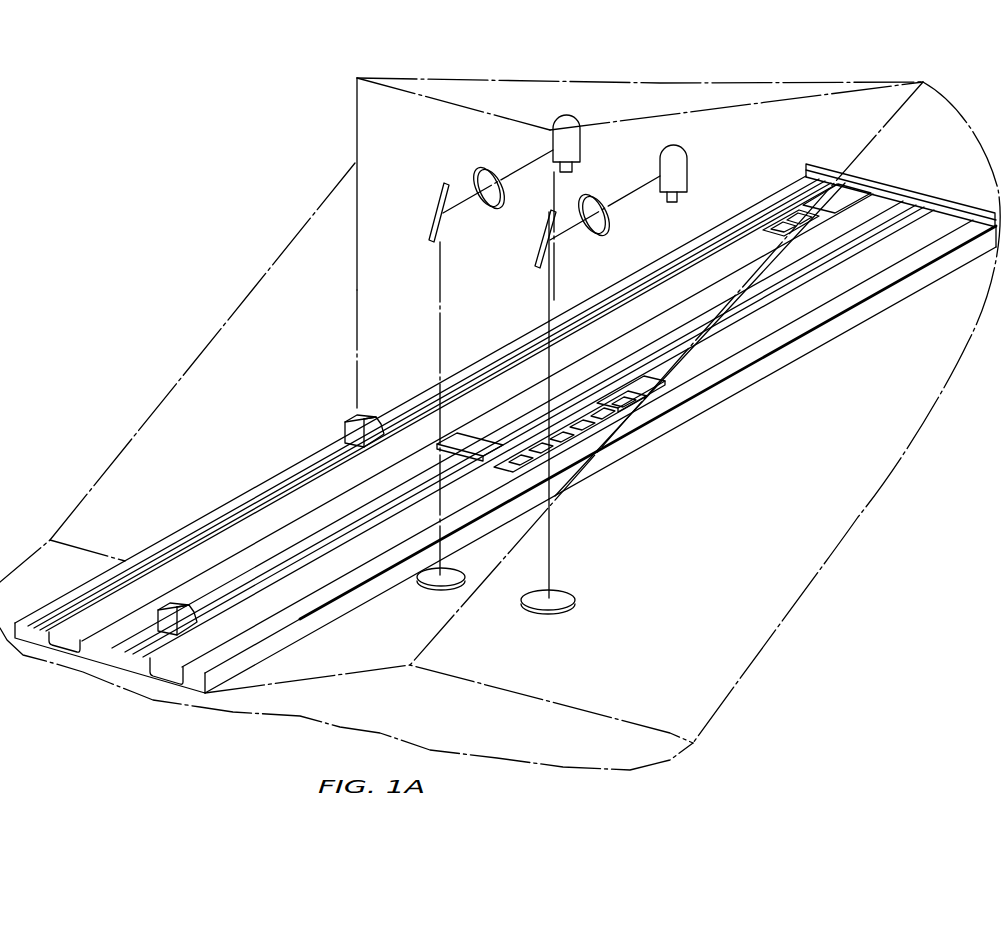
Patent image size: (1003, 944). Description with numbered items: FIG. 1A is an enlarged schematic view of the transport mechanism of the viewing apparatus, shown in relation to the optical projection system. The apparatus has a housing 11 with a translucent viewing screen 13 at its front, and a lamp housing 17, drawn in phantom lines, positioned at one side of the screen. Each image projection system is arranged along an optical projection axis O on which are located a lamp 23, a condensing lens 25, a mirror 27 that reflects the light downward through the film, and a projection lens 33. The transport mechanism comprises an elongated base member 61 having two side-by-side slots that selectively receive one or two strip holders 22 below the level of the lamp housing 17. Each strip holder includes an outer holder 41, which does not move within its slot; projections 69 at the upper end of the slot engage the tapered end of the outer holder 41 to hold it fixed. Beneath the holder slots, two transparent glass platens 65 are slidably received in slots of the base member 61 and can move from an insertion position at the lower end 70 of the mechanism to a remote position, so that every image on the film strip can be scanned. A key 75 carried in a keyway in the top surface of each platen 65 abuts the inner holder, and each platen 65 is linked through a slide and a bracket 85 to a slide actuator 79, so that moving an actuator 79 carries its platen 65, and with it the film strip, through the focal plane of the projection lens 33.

The housing 11 is at (112, 470).
The translucent viewing screen 13 is at (746, 502).
The lamp housing 17 is at (368, 125).
The strip holder 22 is at (268, 608).
The lamp 23 is at (660, 154).
The condensing lens 25 is at (490, 180).
The mirror 27 is at (443, 195).
The projection lens 33 is at (428, 586).
The outer holder 41 is at (497, 473).
The base member 61 is at (270, 480).
The platen 65 is at (727, 267).
The projection 69 is at (500, 482).
The lower end 70 is at (117, 657).
The key 75 is at (600, 427).
The slide actuator 79 is at (352, 425).
The bracket 85 is at (660, 396).
The optical projection axis O is at (440, 288).